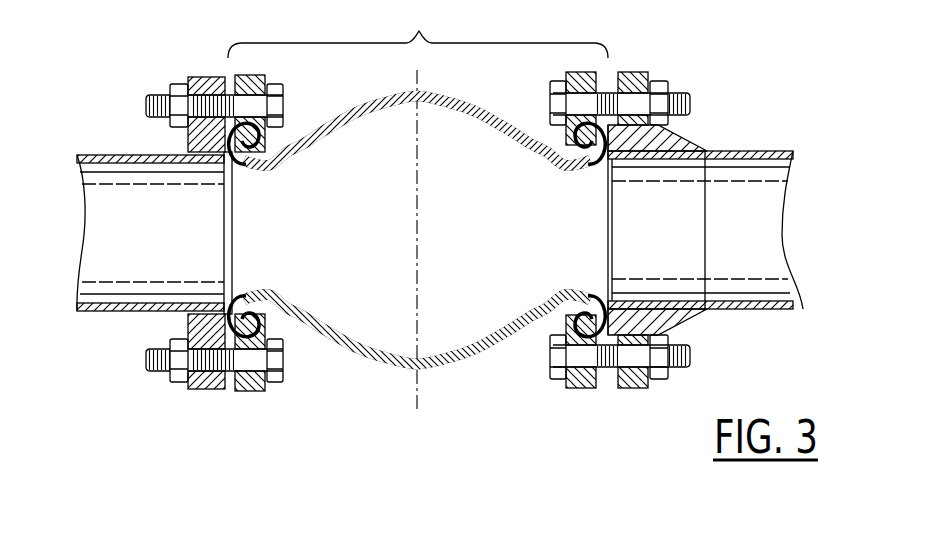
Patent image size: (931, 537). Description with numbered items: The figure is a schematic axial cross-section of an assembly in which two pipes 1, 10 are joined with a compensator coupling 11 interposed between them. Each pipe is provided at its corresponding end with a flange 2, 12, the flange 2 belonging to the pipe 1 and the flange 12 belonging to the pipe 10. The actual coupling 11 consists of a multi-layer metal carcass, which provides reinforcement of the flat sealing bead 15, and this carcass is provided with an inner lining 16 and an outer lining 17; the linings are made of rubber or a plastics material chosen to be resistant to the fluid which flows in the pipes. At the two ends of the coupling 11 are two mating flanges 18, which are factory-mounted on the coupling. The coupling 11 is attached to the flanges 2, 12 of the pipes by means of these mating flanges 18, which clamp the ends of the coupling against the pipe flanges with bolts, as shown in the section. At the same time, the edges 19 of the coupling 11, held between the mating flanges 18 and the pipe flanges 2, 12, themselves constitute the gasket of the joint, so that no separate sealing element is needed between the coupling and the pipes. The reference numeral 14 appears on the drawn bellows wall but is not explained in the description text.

The pipe 1 is at (103, 153).
The flange 2 is at (202, 392).
The pipe 10 is at (765, 150).
The compensator coupling 11 is at (402, 223).
The flange 12 is at (684, 140).
The bellows 14 is at (478, 64).
The flat sealing bead 15 is at (360, 319).
The inner lining 16 is at (360, 319).
The outer lining 17 is at (360, 352).
The mating flanges 18 is at (266, 72).
The edges 19 is at (232, 320).